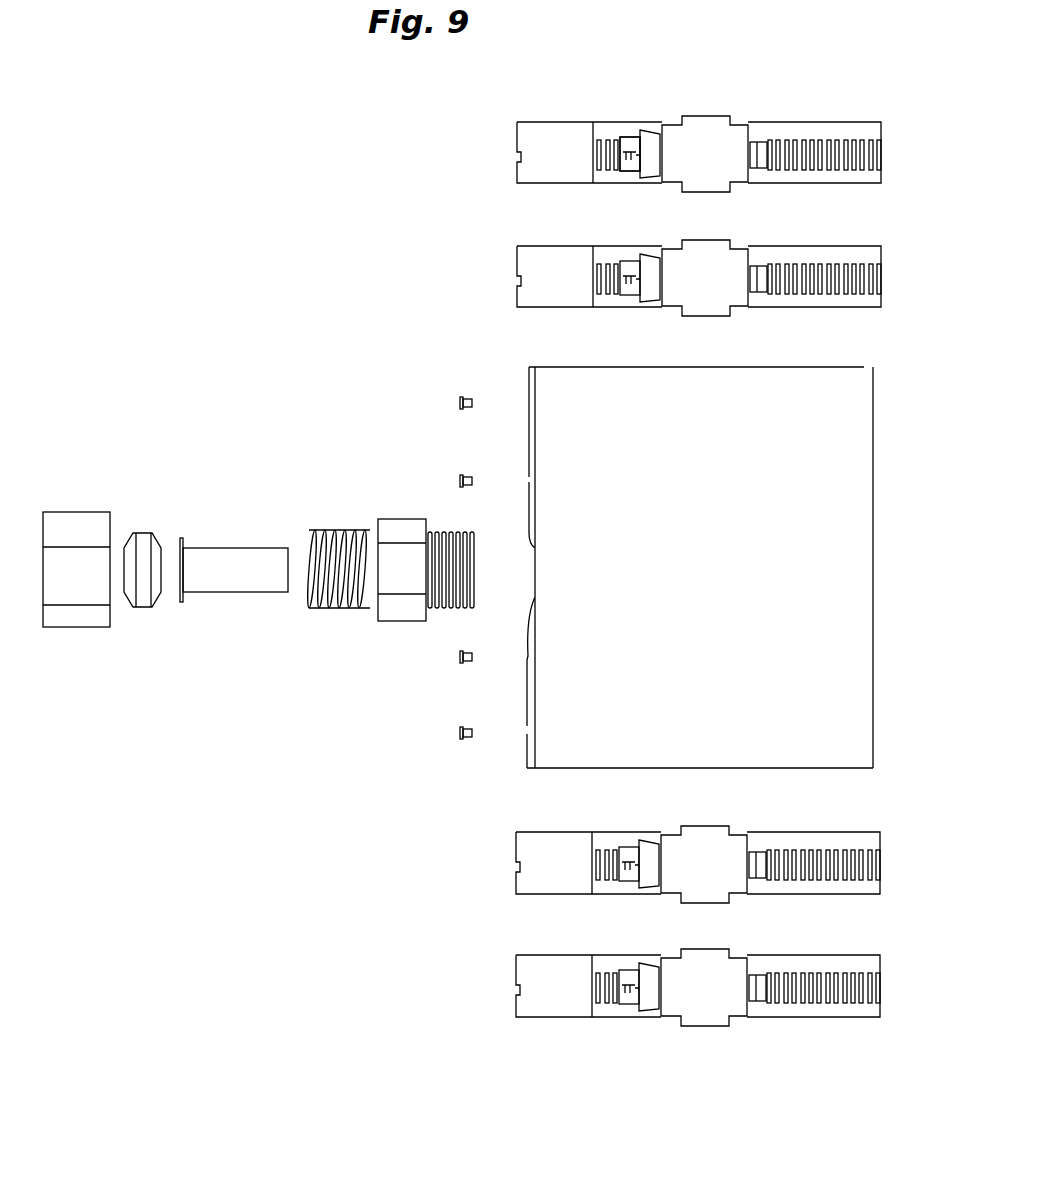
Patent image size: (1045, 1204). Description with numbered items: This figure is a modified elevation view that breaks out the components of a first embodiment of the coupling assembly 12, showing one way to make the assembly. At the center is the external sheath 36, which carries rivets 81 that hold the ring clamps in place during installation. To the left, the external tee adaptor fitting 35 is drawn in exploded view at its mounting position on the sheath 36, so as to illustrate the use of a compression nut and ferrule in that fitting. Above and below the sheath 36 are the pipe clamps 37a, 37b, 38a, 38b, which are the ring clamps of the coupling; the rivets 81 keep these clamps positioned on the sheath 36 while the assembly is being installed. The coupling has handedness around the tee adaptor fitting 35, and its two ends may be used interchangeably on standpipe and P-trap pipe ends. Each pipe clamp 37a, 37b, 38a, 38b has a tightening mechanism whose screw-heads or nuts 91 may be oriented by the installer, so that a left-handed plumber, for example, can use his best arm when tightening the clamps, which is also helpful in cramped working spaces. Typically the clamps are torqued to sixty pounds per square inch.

The connector assembly 12 is at (262, 828).
The external tee adaptor fitting 35 is at (234, 462).
The sheath 36 is at (518, 378).
The pipe clamp 37a is at (516, 1006).
The pipe clamp 37b is at (516, 881).
The pipe clamp 38a is at (517, 140).
The pipe clamp 38b is at (517, 262).
The rivet 81 is at (450, 400).
The screw-head or nut 91 is at (627, 126).